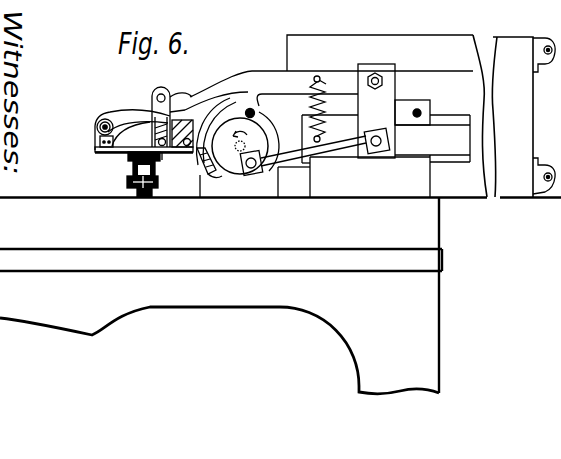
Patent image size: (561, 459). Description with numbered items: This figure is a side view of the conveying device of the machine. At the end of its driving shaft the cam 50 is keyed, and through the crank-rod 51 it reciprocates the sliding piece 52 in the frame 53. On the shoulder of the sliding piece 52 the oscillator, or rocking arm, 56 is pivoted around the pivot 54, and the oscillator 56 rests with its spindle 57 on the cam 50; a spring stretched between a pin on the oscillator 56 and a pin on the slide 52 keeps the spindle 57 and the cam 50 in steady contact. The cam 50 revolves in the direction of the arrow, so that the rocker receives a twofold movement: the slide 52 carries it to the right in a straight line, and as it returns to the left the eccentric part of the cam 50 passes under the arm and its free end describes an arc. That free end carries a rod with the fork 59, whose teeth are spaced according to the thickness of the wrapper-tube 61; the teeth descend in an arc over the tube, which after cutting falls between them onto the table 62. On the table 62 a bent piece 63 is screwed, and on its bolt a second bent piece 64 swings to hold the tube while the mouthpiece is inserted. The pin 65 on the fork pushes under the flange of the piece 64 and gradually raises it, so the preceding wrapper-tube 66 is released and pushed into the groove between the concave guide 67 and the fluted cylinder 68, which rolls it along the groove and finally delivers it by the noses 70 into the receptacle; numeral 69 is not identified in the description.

The cam 50 is at (241, 173).
The crank-rod 51 is at (293, 155).
The sliding piece 52 is at (460, 152).
The frame 53 is at (381, 186).
The pivot 54 is at (383, 79).
The oscillator 56 is at (236, 85).
The spindle 57 is at (255, 114).
The fork 59 is at (131, 134).
The wrapper-tube 61 is at (120, 142).
The table 62 is at (106, 152).
The bow or bent piece 63 is at (149, 116).
The second bow or bent piece 64 is at (380, 53).
The pin 65 is at (553, 131).
The preceding wrapper-tube 66 is at (171, 165).
The concave guide 67 is at (197, 180).
The cylinder 68 is at (553, 106).
The lug 69 is at (556, 84).
The noses 70 is at (202, 173).